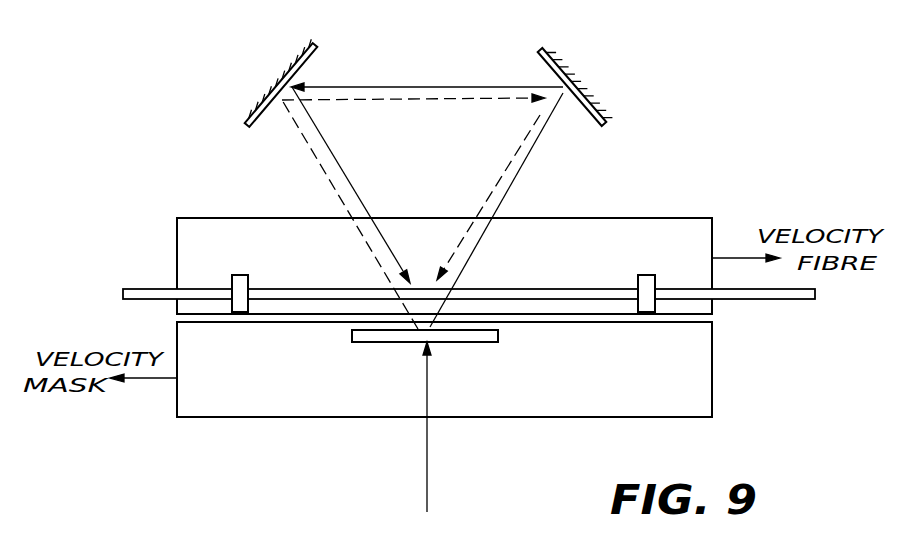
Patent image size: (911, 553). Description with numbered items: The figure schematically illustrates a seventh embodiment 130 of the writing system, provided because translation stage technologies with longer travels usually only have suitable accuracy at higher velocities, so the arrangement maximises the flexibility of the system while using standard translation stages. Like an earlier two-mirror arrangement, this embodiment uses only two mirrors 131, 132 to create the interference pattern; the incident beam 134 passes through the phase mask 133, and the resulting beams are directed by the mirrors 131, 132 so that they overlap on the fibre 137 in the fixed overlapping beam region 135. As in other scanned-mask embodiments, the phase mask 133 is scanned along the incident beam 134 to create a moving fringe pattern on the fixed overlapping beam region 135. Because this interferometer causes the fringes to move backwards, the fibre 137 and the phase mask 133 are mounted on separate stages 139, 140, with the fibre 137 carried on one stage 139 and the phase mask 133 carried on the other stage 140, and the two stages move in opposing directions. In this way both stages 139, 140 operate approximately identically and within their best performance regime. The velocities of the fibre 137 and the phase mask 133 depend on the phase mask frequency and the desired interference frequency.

The further embodiment 130 is at (737, 66).
The mirror 131 is at (247, 126).
The mirror 132 is at (600, 128).
The phase mask 133 is at (465, 343).
The light beam 134 is at (428, 453).
The fixed overlapping beam region 135 is at (425, 252).
The fibre 137 is at (551, 293).
The stage 139 is at (177, 240).
The stage 140 is at (712, 384).